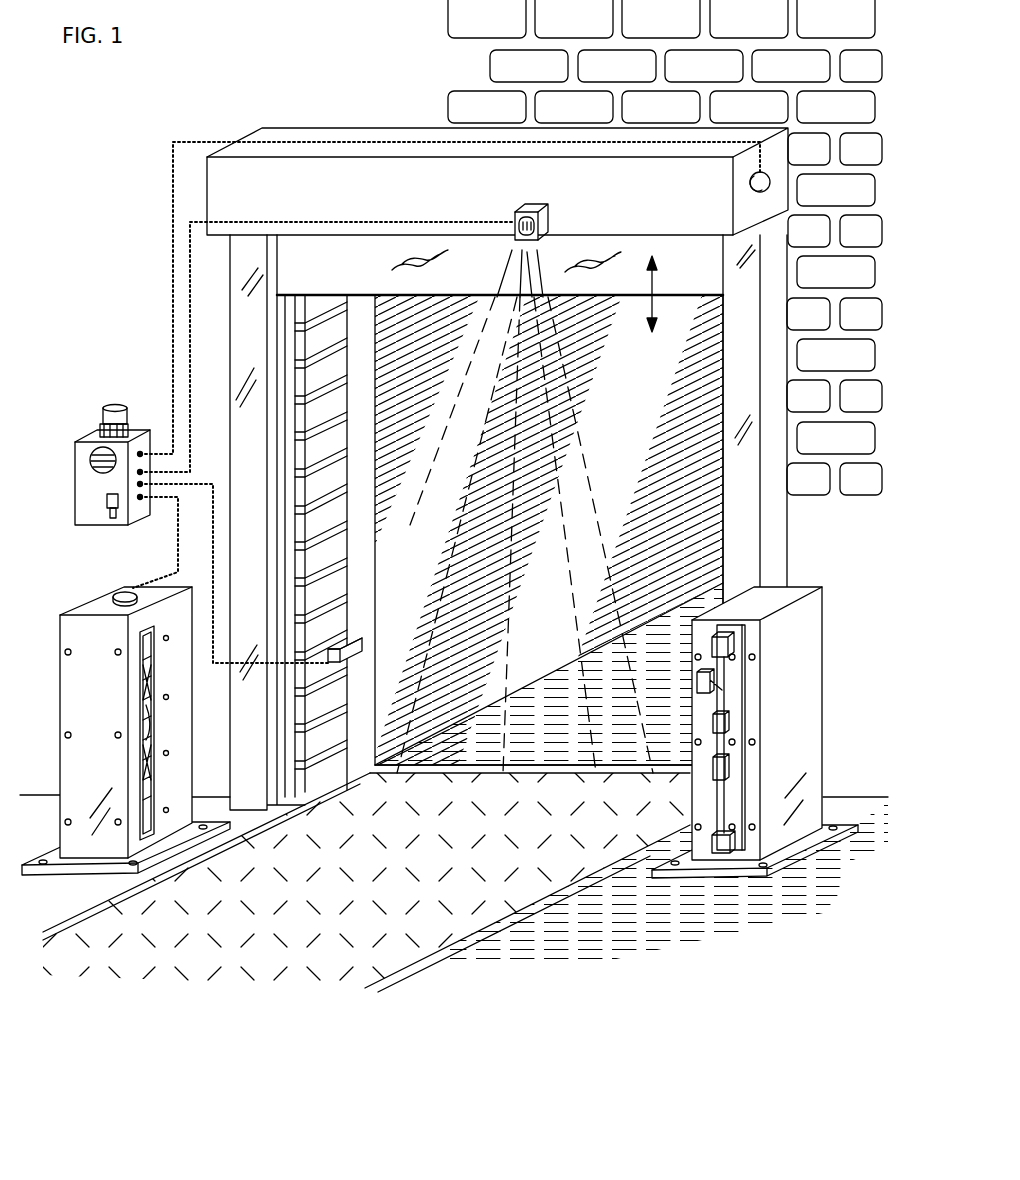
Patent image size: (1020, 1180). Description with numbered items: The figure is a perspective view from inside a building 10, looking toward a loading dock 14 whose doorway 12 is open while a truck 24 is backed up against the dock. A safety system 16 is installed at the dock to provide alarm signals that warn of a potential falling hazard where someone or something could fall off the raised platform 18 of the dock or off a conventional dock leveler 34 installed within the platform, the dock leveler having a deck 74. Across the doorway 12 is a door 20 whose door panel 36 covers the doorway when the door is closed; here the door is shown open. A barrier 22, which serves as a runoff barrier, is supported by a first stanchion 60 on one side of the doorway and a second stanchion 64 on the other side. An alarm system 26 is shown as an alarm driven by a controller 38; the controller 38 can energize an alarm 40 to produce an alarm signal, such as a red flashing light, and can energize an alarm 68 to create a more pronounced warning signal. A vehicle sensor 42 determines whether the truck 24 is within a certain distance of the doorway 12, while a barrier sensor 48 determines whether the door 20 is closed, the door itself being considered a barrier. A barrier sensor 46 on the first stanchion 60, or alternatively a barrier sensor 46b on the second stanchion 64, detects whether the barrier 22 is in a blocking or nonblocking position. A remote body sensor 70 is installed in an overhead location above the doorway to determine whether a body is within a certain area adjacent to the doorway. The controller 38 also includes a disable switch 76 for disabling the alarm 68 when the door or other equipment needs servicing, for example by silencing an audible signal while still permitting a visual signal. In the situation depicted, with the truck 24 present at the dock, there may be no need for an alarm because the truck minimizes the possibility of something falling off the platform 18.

The building 10 is at (827, 438).
The doorway 12 is at (338, 614).
The loading dock 14 is at (480, 124).
The safety system 16 is at (432, 412).
The raised platform 18 is at (603, 903).
The door 20 is at (683, 298).
The barrier 22 is at (140, 693).
The truck 24 is at (363, 322).
The alarm system 26 is at (174, 402).
The dock leveler 34 is at (117, 913).
The door panel 36 is at (310, 255).
The controller 38 is at (174, 402).
The alarm 40 is at (112, 405).
The vehicle sensor 42 is at (360, 664).
The barrier sensor 46 is at (120, 596).
The barrier sensor 46b is at (697, 690).
The barrier sensor 48 is at (745, 194).
The first stanchion 60 is at (126, 727).
The second stanchion 64 is at (759, 732).
The alarm 68 is at (88, 458).
The remote body sensor 70 is at (548, 214).
The deck 74 is at (428, 913).
The disable switch 76 is at (112, 520).